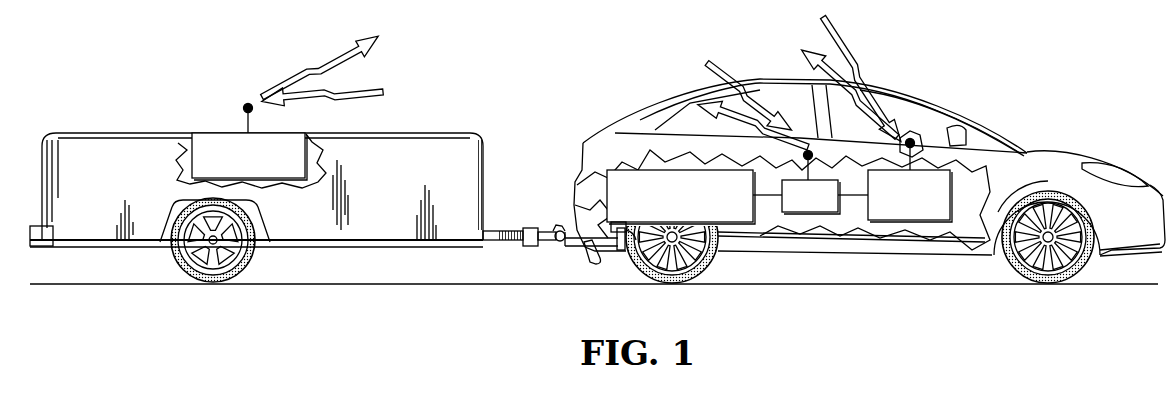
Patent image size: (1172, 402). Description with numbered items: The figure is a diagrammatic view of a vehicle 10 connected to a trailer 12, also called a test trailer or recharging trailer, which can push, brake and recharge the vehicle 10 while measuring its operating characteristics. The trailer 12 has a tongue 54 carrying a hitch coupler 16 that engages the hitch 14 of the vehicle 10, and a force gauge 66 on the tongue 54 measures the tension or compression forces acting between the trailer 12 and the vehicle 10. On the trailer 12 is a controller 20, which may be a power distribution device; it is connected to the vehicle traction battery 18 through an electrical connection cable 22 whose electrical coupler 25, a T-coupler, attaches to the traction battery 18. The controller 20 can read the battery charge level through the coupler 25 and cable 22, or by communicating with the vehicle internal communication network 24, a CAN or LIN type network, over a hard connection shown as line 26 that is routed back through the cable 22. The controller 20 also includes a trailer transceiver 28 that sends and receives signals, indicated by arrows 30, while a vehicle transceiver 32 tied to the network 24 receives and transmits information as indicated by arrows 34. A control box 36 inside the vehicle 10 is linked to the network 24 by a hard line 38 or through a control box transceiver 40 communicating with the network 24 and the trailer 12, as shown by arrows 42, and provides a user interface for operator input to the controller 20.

The vehicle 10 is at (990, 72).
The trailer 12 is at (133, 74).
The hitch 14 is at (583, 247).
The hitch coupler 16 is at (559, 230).
The vehicle traction battery 18 is at (605, 165).
The controller 20 is at (185, 152).
The electrical connection cable 22 is at (447, 250).
The vehicle internal communication network 24 is at (812, 213).
The electrical coupler 25 is at (631, 234).
The line 26 is at (767, 196).
The trailer transceiver 28 is at (245, 106).
The arrows 30 is at (360, 92).
The vehicle transceiver 32 is at (822, 168).
The arrows 34 is at (740, 92).
The control box 36 is at (912, 222).
The line 38 is at (853, 197).
The control box transceiver 40 is at (916, 138).
The arrows 42 is at (838, 40).
The tongue 54 is at (513, 231).
The force gauge 66 is at (530, 228).